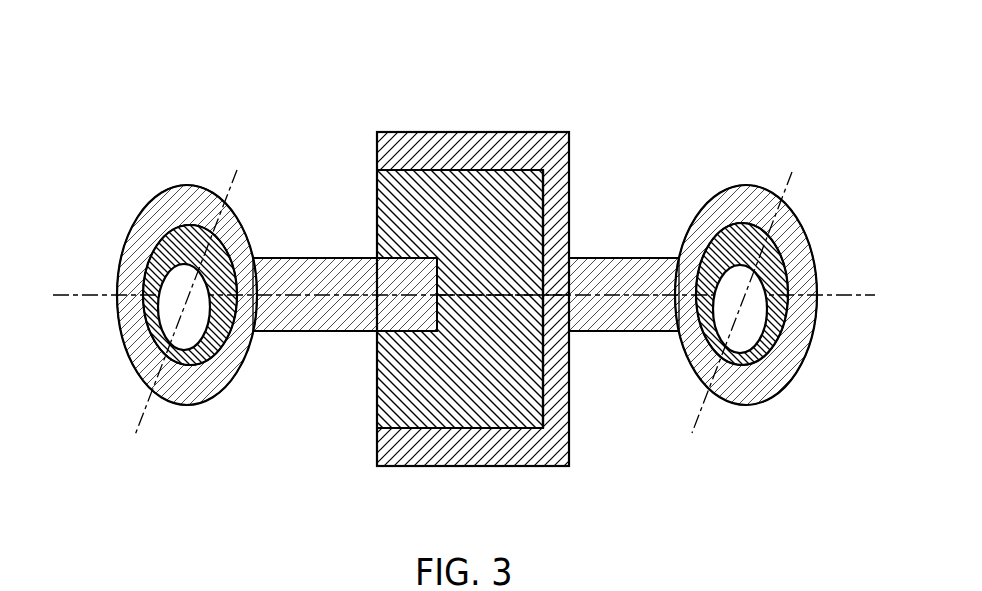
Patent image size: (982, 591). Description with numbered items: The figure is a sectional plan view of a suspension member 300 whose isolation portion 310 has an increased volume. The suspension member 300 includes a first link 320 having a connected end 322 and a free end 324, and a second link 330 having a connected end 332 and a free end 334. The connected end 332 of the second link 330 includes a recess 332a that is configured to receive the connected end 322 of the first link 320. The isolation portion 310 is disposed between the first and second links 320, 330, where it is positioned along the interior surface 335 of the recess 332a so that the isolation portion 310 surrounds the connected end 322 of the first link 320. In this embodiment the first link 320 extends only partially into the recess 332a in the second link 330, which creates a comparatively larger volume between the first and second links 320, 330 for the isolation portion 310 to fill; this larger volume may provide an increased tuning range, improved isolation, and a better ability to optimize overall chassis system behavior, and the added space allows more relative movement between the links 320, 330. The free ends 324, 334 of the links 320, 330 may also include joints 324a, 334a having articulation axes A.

The suspension member 300 is at (462, 259).
The isolation portion 310 is at (377, 400).
The first link 320 is at (377, 301).
The connected end 322 is at (388, 254).
The free end 324 is at (150, 205).
The joint 324a is at (147, 320).
The second link 330 is at (765, 289).
The connected end 332 is at (476, 304).
The recess 332a is at (518, 430).
The free end 334 is at (802, 228).
The joint 334a is at (787, 328).
The interior surface 335 is at (535, 212).